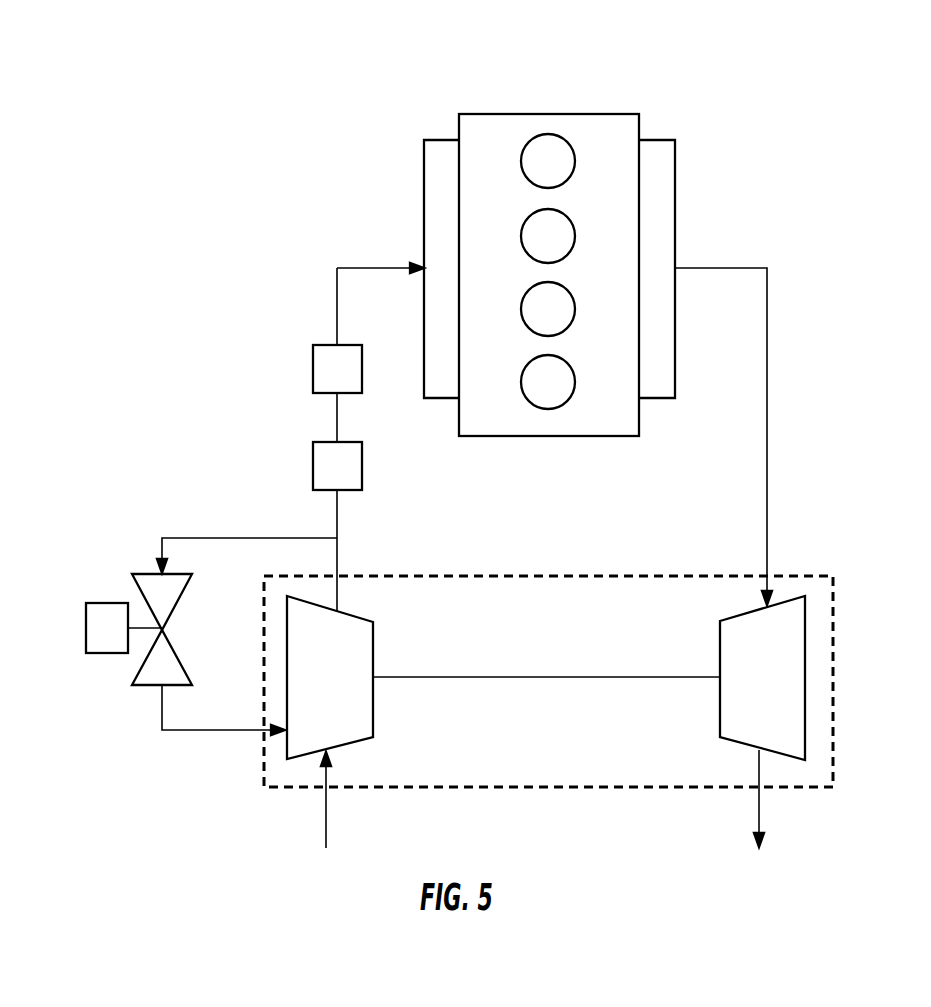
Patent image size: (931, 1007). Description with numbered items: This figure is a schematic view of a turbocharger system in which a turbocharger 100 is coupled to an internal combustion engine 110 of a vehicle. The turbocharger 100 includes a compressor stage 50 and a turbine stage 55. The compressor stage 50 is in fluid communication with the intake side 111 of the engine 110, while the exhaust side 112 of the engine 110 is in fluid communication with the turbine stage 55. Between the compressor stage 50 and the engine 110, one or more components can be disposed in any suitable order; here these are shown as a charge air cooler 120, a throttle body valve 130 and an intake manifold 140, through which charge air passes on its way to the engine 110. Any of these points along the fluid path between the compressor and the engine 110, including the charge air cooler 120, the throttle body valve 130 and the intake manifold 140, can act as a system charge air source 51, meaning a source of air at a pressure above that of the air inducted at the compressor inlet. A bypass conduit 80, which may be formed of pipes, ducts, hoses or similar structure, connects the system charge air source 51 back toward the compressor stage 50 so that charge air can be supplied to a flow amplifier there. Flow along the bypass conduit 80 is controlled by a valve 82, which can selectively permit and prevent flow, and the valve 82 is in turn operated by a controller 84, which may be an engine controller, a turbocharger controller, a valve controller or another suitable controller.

The internal combustion engine 110 is at (613, 114).
The intake manifold 140 is at (432, 140).
The intake side 111 is at (400, 188).
The exhaust side 112 is at (690, 177).
The throttle body valve 130 is at (313, 345).
The charge air cooler 120 is at (313, 441).
The system charge air source 51 is at (331, 533).
The bypass conduit 80 is at (190, 538).
The valve 82 is at (132, 574).
The controller 84 is at (86, 604).
The turbocharger 100 is at (678, 800).
The compressor stage 50 is at (293, 760).
The turbine stage 55 is at (805, 762).